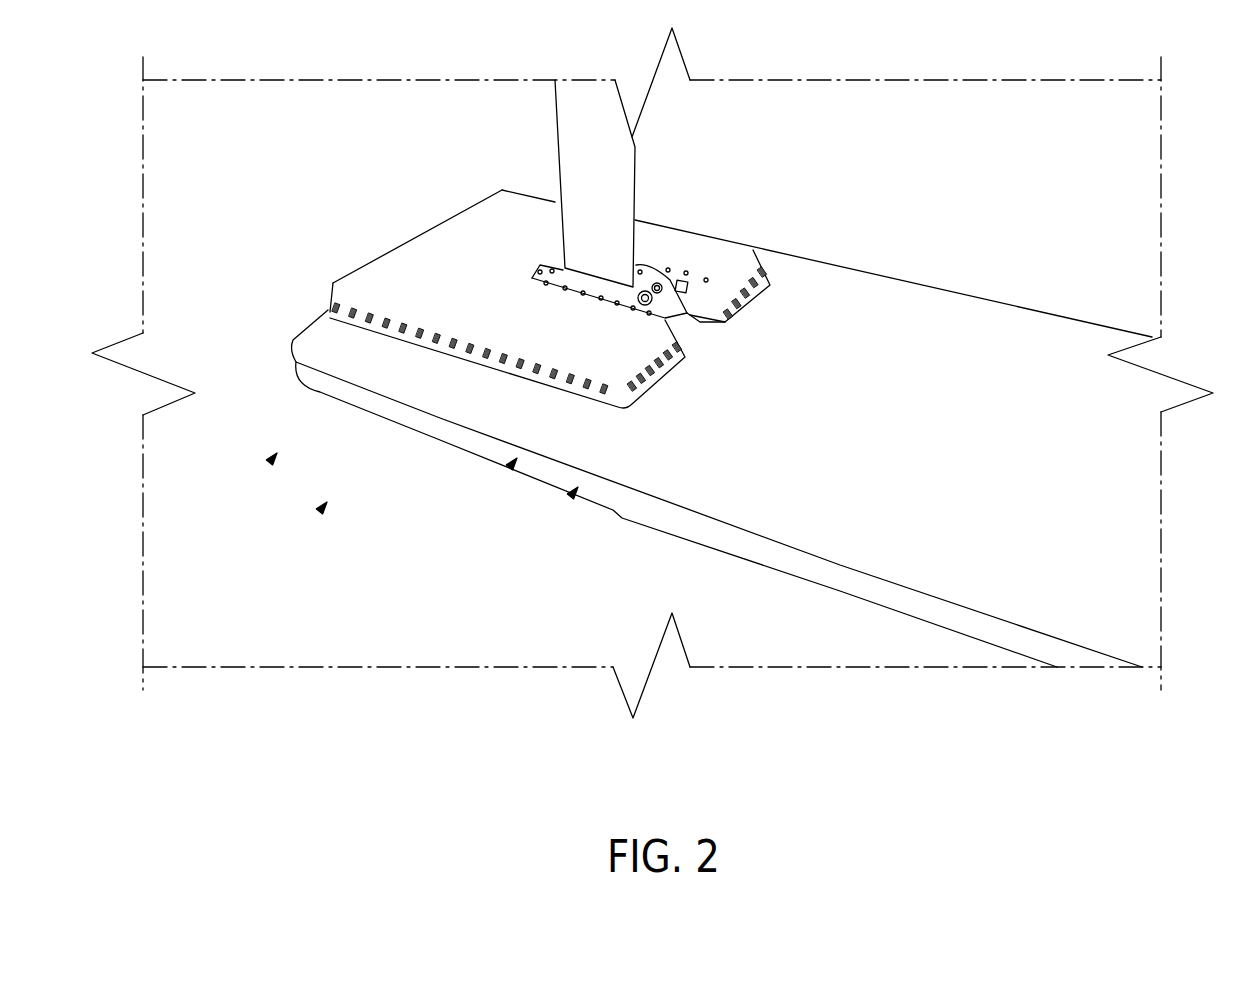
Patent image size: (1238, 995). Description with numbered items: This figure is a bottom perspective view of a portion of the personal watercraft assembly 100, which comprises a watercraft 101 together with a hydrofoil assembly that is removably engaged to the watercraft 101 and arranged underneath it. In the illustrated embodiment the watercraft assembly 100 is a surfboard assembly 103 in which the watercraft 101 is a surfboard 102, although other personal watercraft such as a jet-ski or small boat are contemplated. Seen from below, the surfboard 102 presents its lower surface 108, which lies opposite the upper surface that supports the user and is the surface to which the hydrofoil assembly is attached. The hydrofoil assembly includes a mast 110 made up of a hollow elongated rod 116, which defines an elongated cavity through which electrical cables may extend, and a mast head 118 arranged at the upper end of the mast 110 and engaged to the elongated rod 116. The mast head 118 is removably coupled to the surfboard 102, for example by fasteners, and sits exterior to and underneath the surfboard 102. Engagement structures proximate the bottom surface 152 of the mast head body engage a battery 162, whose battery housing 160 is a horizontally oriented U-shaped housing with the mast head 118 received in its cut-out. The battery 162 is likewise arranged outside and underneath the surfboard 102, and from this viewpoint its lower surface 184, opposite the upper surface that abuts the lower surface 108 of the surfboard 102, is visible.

The personal watercraft assembly 100 is at (322, 509).
The watercraft 101 is at (573, 494).
The surfboard 102 is at (512, 465).
The surfboard assembly 103 is at (272, 460).
The lower surface 108 is at (858, 456).
The mast 110 is at (610, 157).
The elongated rod 116 is at (568, 103).
The mast head 118 is at (647, 278).
The bottom surface 152 is at (578, 283).
The battery housing 160 is at (515, 291).
The battery 162 is at (372, 285).
The lower surface 184 is at (447, 286).